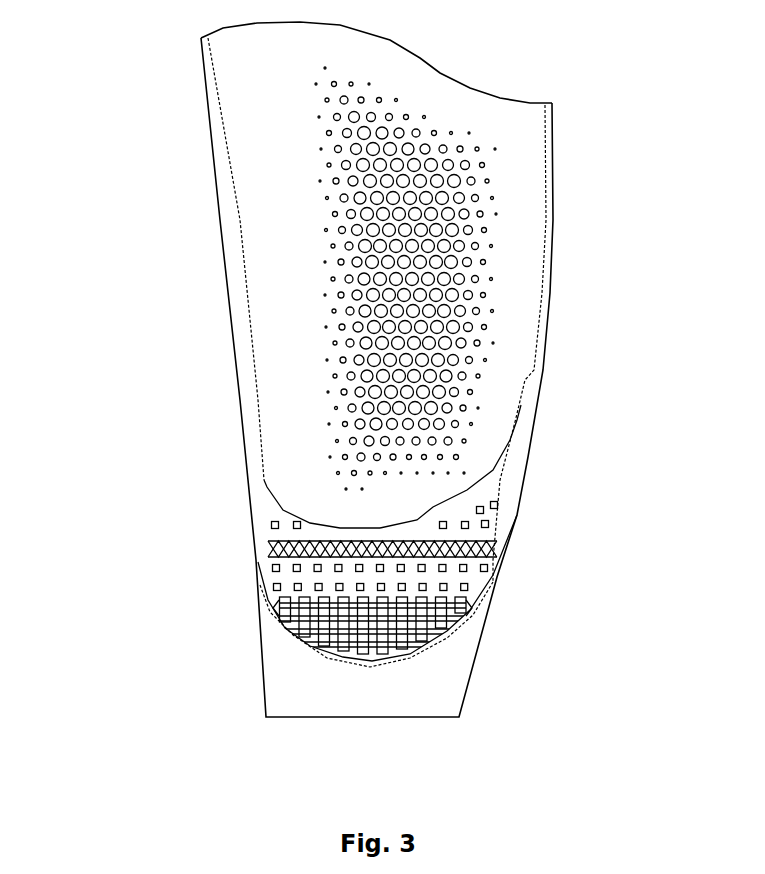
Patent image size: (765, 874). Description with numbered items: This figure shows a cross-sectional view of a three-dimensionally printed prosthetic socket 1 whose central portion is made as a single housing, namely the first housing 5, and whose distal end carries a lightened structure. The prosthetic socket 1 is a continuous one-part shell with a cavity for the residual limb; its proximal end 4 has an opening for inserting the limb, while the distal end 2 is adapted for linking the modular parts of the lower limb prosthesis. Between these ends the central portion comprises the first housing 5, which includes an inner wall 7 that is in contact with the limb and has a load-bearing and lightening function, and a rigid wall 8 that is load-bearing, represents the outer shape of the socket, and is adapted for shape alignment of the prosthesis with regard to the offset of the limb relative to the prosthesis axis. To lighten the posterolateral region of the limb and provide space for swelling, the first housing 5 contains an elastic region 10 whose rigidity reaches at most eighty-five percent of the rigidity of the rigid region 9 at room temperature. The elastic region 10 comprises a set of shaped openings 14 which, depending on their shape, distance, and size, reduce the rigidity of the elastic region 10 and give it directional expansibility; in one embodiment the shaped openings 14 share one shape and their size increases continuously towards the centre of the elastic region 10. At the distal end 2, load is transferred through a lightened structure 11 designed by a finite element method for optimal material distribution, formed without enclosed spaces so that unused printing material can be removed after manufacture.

The prosthetic socket 1 is at (183, 309).
The distal end 2 is at (429, 631).
The proximal end 4 is at (540, 117).
The first housing 5 is at (545, 296).
The inner wall 7 is at (525, 372).
The rigid wall 8 is at (555, 217).
The rigid region 9 is at (273, 188).
The elastic region 10 is at (474, 281).
The lightened structure 11 is at (450, 581).
The shaped openings 14 is at (268, 484).